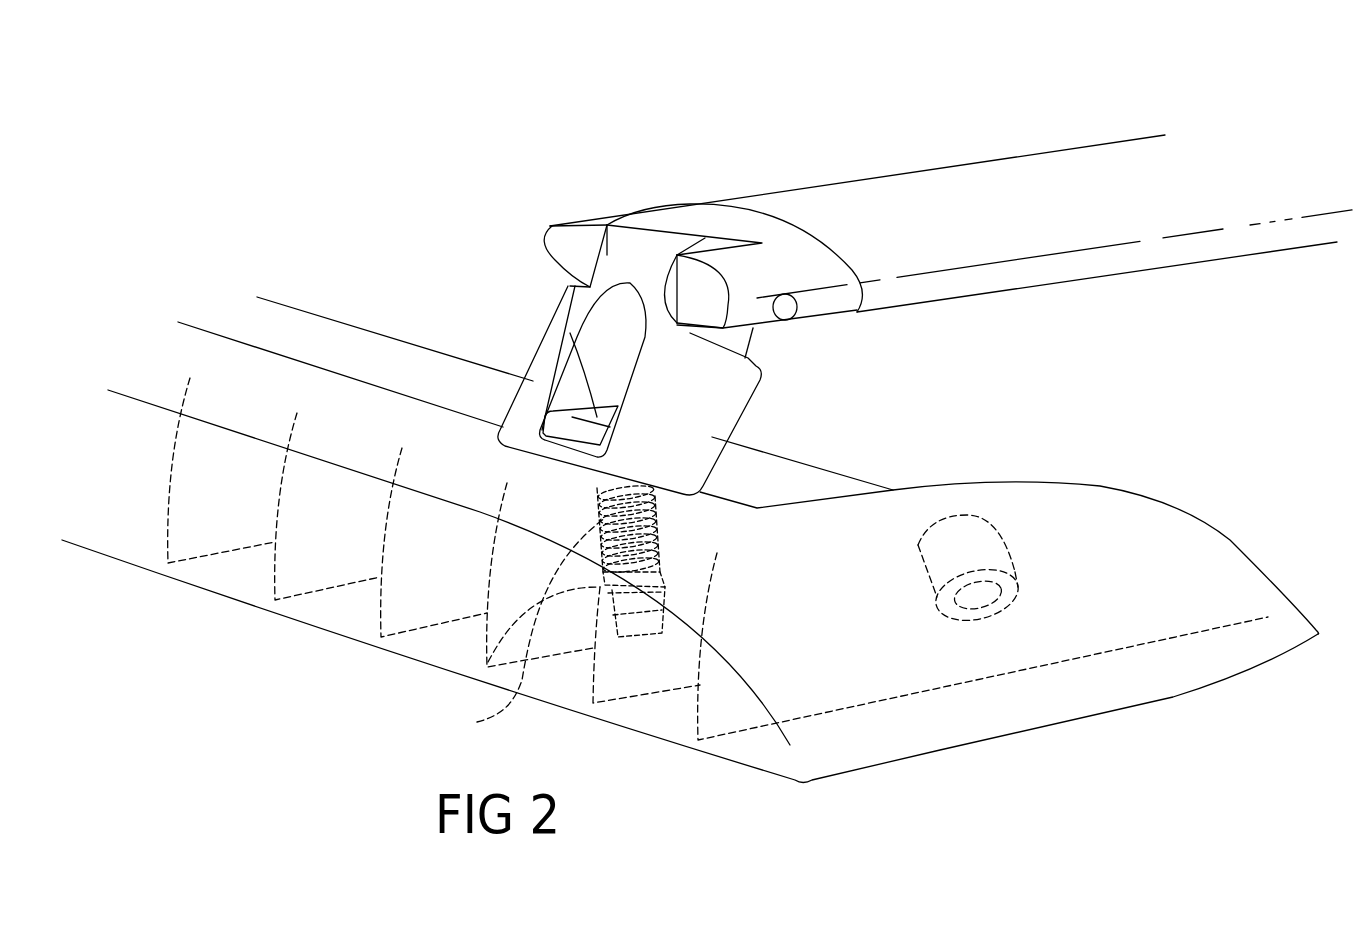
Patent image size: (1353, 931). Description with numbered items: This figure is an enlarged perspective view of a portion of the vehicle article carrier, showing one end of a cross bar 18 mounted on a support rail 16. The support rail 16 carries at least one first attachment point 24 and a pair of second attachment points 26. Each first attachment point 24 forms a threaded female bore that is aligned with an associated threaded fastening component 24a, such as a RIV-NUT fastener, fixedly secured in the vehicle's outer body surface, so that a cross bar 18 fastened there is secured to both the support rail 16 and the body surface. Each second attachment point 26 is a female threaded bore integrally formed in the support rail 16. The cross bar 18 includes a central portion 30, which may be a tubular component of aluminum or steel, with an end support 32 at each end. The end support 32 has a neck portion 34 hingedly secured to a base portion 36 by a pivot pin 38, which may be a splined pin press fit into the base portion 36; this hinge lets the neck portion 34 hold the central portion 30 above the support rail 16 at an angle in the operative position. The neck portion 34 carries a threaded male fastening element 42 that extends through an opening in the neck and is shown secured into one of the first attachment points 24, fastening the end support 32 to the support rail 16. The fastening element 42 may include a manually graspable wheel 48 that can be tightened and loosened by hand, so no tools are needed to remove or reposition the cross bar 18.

The support rail 16 is at (667, 742).
The cross bar 18 is at (1010, 150).
The first attachment point 24 is at (473, 673).
The threaded fastening component 24a is at (517, 628).
The second attachment point 26 is at (978, 600).
The central portion 30 is at (1117, 158).
The end support 32 is at (525, 240).
The neck portion 34 is at (745, 377).
The base portion 36 is at (718, 197).
The pivot pin 38 is at (789, 313).
The threaded male fastening element 42 is at (558, 410).
The manually graspable wheel 48 is at (570, 333).